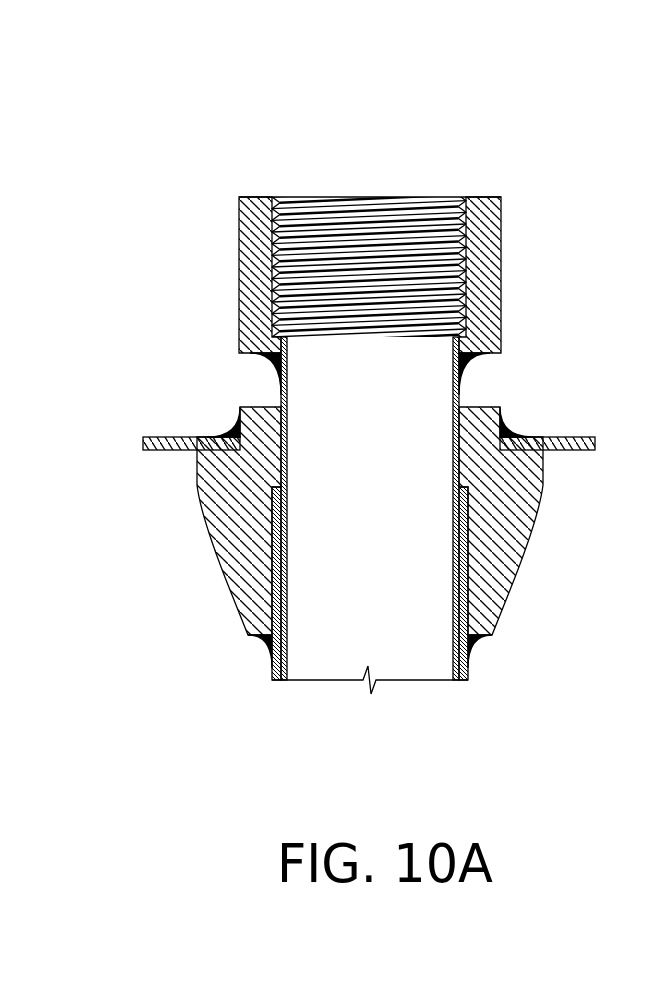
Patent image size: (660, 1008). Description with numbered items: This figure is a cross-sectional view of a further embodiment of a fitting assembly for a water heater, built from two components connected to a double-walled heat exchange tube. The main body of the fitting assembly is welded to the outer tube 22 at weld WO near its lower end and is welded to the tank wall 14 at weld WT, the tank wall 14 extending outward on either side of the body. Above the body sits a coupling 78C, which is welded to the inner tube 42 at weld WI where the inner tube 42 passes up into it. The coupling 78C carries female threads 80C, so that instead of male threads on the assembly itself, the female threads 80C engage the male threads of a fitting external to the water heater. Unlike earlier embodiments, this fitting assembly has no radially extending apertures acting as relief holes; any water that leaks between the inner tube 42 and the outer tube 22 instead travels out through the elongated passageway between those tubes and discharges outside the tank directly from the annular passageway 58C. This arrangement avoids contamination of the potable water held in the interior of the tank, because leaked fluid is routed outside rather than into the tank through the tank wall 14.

The tank wall 14 is at (567, 438).
The outer tube 22 is at (273, 672).
The inner tube 42 is at (288, 642).
The annular passageway 58C is at (453, 469).
The coupling 78C is at (483, 233).
The female threads 80C is at (274, 222).
The weld WI is at (477, 368).
The weld WT is at (222, 430).
The weld WO is at (262, 638).